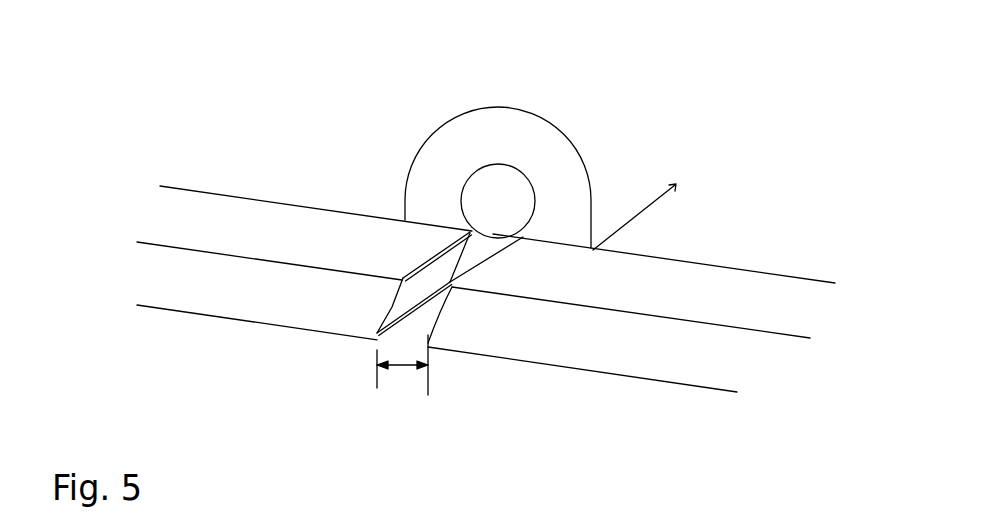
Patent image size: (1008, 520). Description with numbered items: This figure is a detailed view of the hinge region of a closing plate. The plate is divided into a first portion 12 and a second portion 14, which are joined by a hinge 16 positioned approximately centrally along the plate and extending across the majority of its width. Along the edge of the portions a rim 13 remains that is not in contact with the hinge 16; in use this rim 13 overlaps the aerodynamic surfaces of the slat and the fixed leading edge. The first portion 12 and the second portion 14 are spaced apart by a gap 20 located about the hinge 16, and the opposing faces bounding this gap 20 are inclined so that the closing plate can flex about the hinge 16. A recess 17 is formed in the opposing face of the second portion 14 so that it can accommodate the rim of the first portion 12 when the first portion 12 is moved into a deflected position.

The first portion 12 is at (672, 365).
The rim 13 is at (213, 212).
The second portion 14 is at (202, 293).
The hinge 16 is at (553, 165).
The recess 17 is at (380, 323).
The gap 20 is at (400, 365).